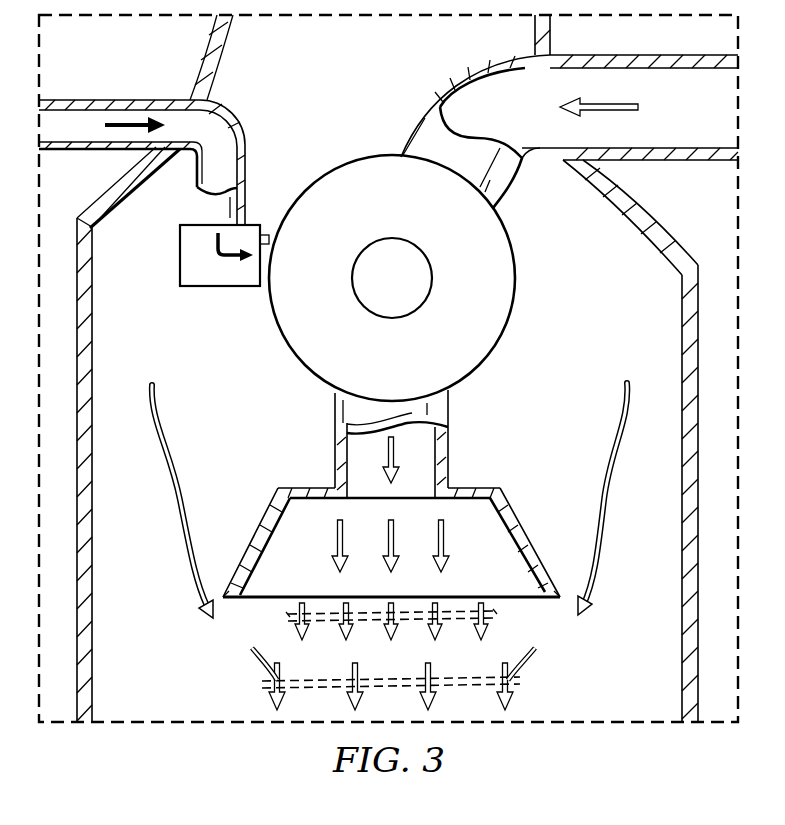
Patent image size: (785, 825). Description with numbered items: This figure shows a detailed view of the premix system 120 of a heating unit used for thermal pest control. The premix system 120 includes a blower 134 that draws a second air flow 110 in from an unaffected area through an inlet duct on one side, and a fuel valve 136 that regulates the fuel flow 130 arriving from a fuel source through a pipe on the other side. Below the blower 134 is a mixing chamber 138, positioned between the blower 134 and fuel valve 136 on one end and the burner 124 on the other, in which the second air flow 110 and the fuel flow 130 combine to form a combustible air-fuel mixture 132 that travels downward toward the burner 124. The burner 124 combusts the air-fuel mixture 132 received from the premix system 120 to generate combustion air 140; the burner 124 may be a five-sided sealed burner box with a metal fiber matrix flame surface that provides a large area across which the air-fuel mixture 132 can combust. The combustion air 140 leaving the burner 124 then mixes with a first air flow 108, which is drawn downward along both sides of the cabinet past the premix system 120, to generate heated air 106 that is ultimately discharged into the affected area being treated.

The heated air 106 is at (522, 679).
The first air flow 108 is at (177, 488).
The second air flow 110 is at (628, 92).
The premix system 120 is at (540, 267).
The burner 124 is at (520, 513).
The fuel flow 130 is at (124, 118).
The air-fuel mixture 132 is at (397, 456).
The blower 134 is at (350, 157).
The fuel valve 136 is at (218, 288).
The mixing chamber 138 is at (335, 455).
The combustion air 140 is at (497, 613).